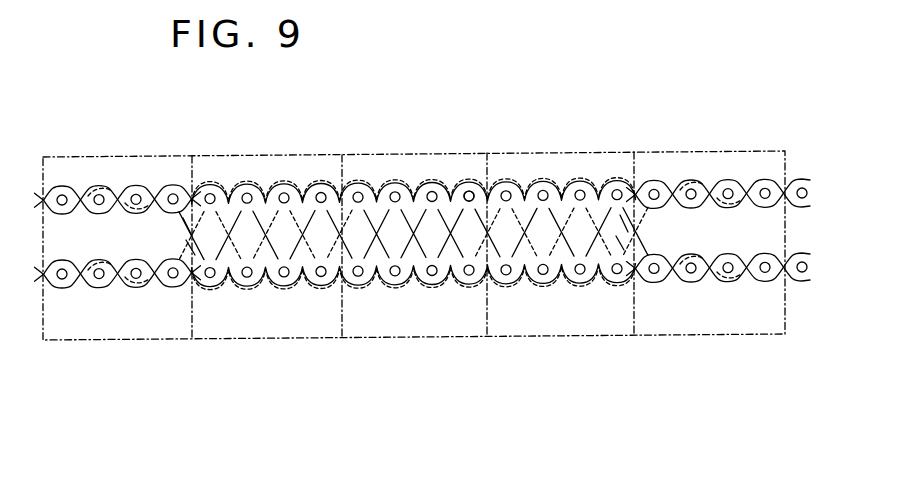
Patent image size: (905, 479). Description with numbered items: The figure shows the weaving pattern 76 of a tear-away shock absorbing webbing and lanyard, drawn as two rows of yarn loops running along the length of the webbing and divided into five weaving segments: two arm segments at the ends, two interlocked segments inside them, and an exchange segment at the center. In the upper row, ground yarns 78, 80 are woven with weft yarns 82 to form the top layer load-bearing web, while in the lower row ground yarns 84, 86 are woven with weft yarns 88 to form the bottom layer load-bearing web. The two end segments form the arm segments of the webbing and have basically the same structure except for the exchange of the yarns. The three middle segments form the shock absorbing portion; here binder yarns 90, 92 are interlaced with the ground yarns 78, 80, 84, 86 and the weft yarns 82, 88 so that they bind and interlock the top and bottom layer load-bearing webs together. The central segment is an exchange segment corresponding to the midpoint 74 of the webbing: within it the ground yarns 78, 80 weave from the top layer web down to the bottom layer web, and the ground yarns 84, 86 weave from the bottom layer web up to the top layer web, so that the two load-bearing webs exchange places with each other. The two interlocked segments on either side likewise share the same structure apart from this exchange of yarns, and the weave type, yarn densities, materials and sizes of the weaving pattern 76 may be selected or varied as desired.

The midpoint 74 is at (434, 406).
The weaving pattern 76 is at (584, 58).
The ground yarn 78 is at (60, 190).
The ground yarn 80 is at (102, 190).
The weft yarns 82 is at (140, 193).
The ground yarn 84 is at (62, 283).
The ground yarn 86 is at (103, 285).
The weft yarns 88 is at (138, 282).
The binder yarn 90 is at (184, 226).
The binder yarn 92 is at (188, 243).